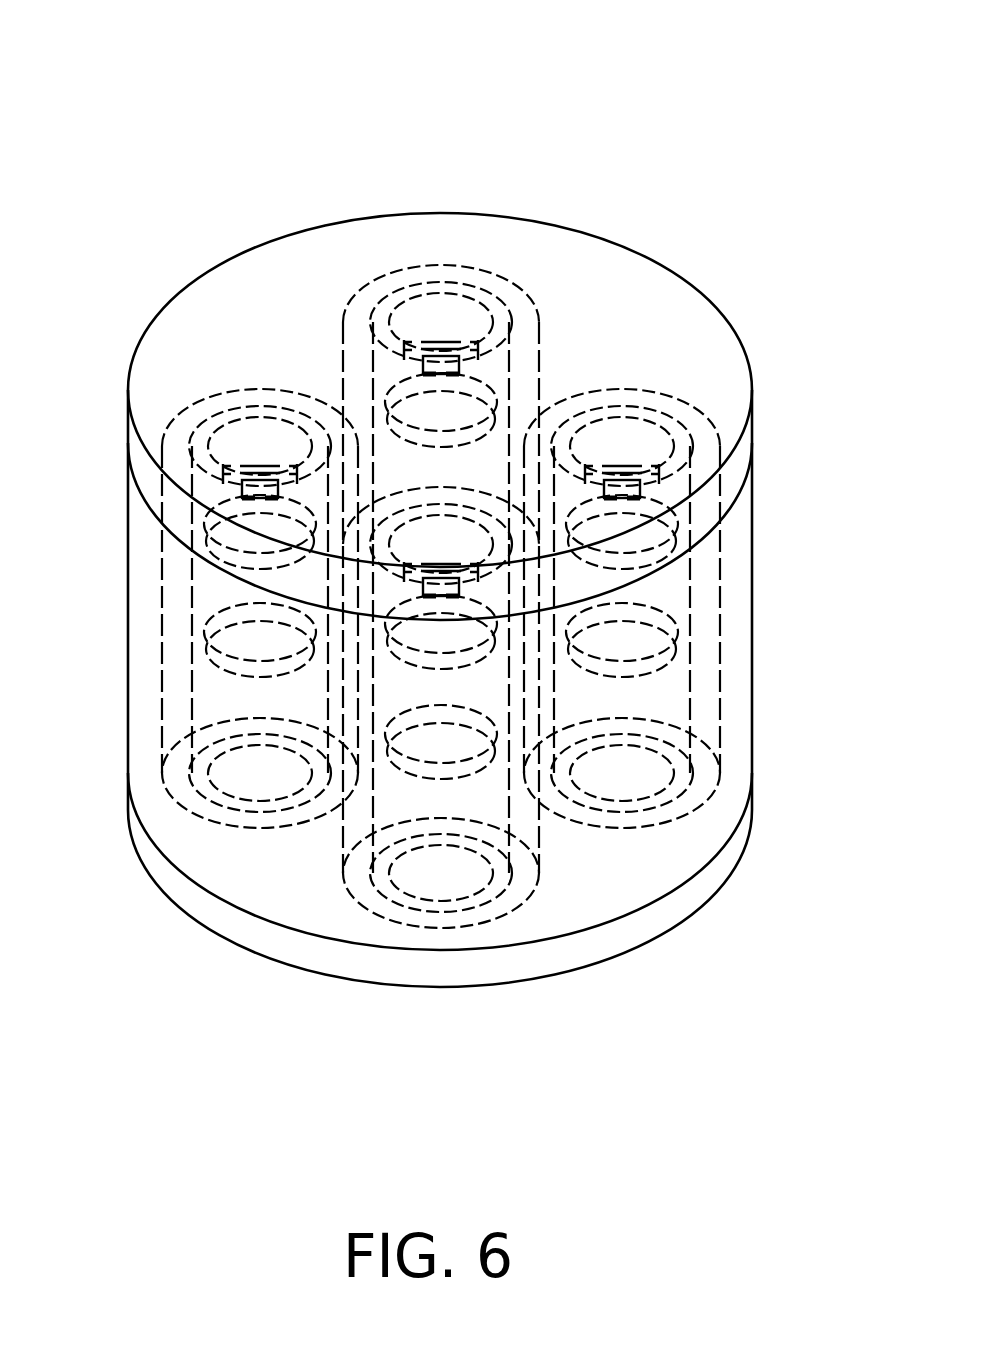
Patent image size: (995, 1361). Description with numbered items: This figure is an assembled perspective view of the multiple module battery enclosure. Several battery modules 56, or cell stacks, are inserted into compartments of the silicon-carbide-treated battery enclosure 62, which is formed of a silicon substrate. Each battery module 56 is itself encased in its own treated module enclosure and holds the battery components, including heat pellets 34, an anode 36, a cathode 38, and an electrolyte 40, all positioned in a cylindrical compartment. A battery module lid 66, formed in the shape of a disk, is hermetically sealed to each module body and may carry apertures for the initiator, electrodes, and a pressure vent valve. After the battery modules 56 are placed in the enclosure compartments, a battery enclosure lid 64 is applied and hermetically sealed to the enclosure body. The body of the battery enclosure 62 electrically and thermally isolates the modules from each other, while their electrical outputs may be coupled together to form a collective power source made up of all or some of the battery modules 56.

The heat pellets 34 is at (168, 536).
The anode 36 is at (170, 588).
The cathode 38 is at (172, 708).
The electrolyte 40 is at (172, 652).
The battery modules 56 is at (442, 140).
The battery enclosure 62 is at (745, 651).
The battery enclosure lid 64 is at (752, 411).
The battery module lid 66 is at (192, 461).